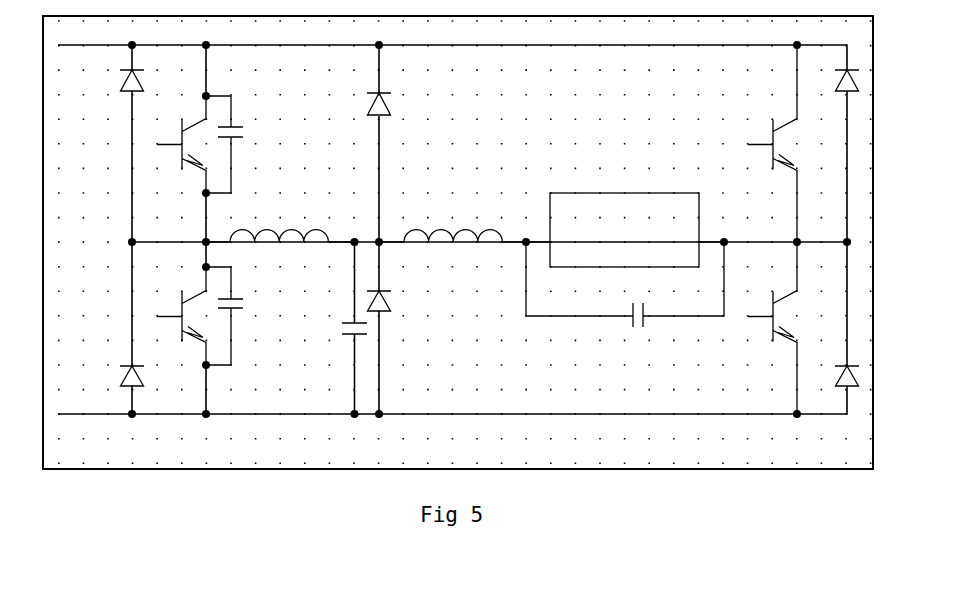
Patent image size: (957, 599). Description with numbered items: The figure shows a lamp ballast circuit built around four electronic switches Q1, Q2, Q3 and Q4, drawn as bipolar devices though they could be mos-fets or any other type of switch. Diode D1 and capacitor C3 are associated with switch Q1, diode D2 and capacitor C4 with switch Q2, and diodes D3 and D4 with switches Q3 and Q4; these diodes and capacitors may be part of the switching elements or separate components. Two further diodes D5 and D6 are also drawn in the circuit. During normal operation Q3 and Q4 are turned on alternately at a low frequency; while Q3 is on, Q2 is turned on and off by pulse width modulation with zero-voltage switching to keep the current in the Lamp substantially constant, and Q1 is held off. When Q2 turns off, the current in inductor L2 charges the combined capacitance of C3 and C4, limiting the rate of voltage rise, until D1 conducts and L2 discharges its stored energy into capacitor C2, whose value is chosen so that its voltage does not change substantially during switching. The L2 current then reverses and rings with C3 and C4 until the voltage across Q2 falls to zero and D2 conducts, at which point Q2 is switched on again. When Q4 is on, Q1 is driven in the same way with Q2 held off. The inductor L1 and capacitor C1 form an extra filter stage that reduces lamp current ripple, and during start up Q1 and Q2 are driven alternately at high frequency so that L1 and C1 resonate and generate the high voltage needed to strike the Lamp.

The diode D1 is at (114, 77).
The diode D2 is at (114, 373).
The diode D3 is at (841, 72).
The diode D4 is at (840, 386).
The diode D5 is at (405, 103).
The diode D6 is at (406, 305).
The switch Q1 is at (181, 141).
The switch Q2 is at (181, 313).
The switch Q3 is at (772, 143).
The switch Q4 is at (772, 328).
The capacitor C1 is at (625, 299).
The capacitor C2 is at (337, 322).
The capacitor C3 is at (249, 144).
The capacitor C4 is at (244, 316).
The inductor L1 is at (452, 222).
The inductor L2 is at (280, 222).
The lamp Lamp is at (625, 230).